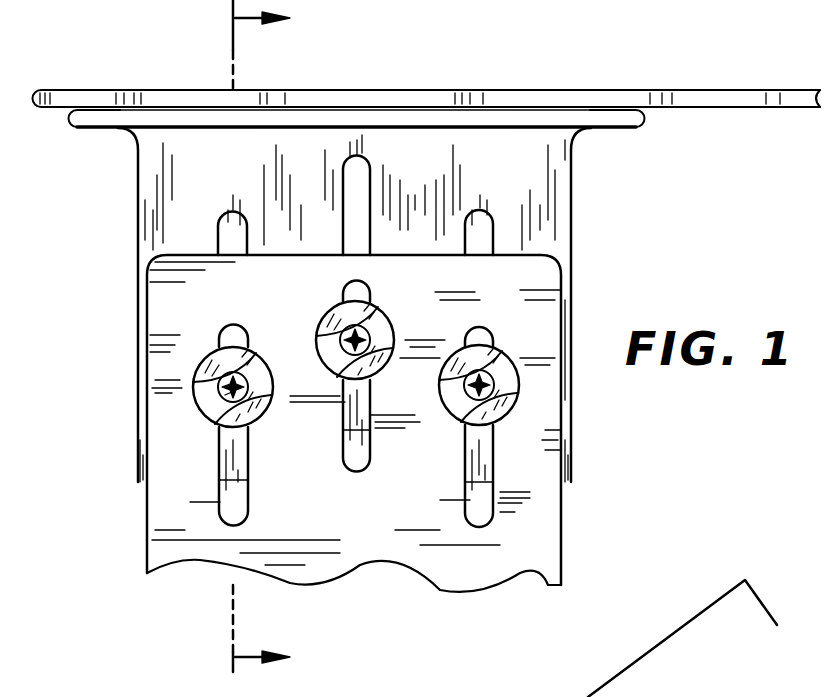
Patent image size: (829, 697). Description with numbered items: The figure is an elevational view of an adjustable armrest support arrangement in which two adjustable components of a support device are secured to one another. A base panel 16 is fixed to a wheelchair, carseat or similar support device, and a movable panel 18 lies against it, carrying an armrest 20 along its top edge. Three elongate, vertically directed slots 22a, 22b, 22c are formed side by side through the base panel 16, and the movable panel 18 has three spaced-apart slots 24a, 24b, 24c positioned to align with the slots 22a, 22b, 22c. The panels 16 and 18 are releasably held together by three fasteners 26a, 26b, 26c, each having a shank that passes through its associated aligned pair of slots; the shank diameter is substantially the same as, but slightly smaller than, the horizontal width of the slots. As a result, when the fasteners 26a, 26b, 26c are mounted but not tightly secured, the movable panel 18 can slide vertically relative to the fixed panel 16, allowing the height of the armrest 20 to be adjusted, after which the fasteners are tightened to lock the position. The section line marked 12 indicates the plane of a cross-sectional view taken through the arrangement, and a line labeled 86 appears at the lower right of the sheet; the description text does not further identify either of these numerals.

The section line 12- 12 is at (230, 343).
The panel 16 is at (170, 314).
The movable panel 18 is at (152, 186).
The armrest 20 is at (70, 90).
The slot 22a is at (248, 512).
The slot 22b is at (370, 450).
The slot 22c is at (466, 511).
The slot 24a is at (233, 212).
The slot 24b is at (370, 178).
The slot 24c is at (495, 220).
The fastener 26a is at (252, 352).
The fastener 26b is at (384, 318).
The fastener 26c is at (498, 348).
The roof line 86 is at (781, 696).